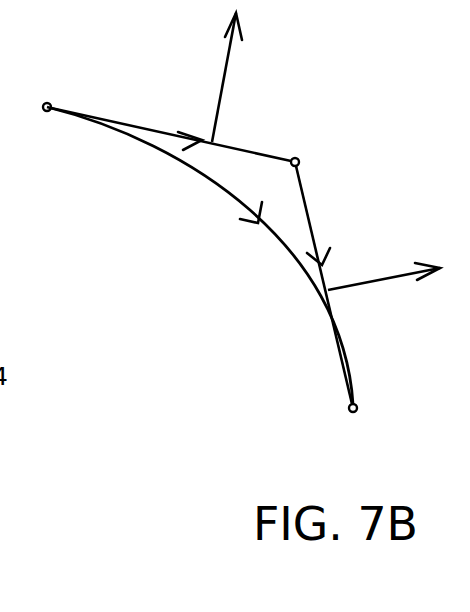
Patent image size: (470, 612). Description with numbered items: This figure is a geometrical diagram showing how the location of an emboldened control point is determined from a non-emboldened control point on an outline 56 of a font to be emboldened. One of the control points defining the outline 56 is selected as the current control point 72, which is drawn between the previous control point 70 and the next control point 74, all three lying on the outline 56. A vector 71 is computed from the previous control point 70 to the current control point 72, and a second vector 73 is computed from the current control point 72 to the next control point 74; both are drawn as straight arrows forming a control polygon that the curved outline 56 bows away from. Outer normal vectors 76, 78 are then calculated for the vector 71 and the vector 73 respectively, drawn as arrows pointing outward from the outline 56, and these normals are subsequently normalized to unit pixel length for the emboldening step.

The previous control point 70 is at (49, 92).
The vector 71 is at (132, 117).
The current control point 72 is at (302, 147).
The vector 73 is at (360, 343).
The next control point 74 is at (365, 398).
The outer normal vector 76 is at (233, 72).
The outer normal vector 78 is at (375, 270).
The outline 56 is at (318, 325).